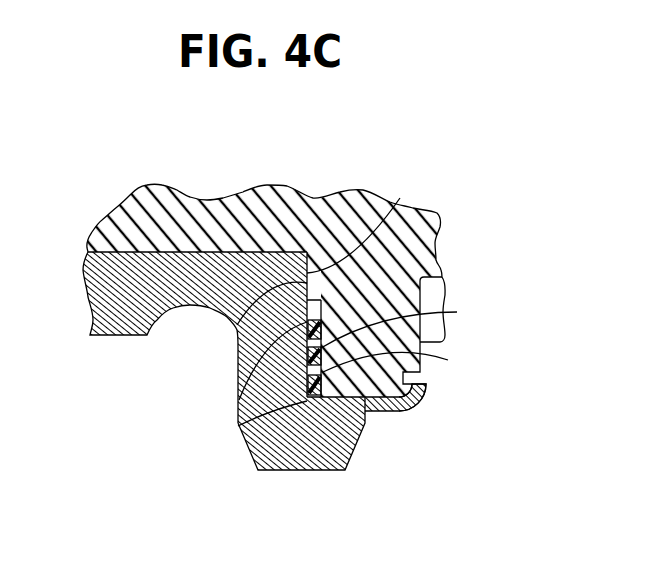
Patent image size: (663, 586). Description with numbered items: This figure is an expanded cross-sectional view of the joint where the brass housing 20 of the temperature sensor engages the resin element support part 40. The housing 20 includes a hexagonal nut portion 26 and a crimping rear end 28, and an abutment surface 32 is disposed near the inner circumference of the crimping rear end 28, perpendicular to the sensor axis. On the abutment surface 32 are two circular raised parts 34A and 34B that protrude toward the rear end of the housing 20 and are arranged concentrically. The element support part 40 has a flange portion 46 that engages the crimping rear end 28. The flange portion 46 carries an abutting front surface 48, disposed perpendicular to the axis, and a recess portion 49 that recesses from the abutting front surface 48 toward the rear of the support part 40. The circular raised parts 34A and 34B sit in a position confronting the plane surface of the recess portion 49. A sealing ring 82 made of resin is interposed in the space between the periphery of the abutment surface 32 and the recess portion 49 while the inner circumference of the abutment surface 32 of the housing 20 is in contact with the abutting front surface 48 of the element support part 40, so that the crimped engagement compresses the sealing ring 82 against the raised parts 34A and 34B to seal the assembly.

The housing 20 is at (132, 335).
The nut portion 26 is at (288, 472).
The crimping rear end 28 is at (428, 401).
The abutment surface 32 is at (378, 212).
The circular raised part 34A is at (411, 324).
The circular raised part 34B is at (407, 365).
The element support part 40 is at (350, 185).
The flange portion 46 is at (366, 400).
The abutting front surface 48 is at (235, 324).
The recess portion 49 is at (240, 390).
The sealing ring 82 is at (243, 427).